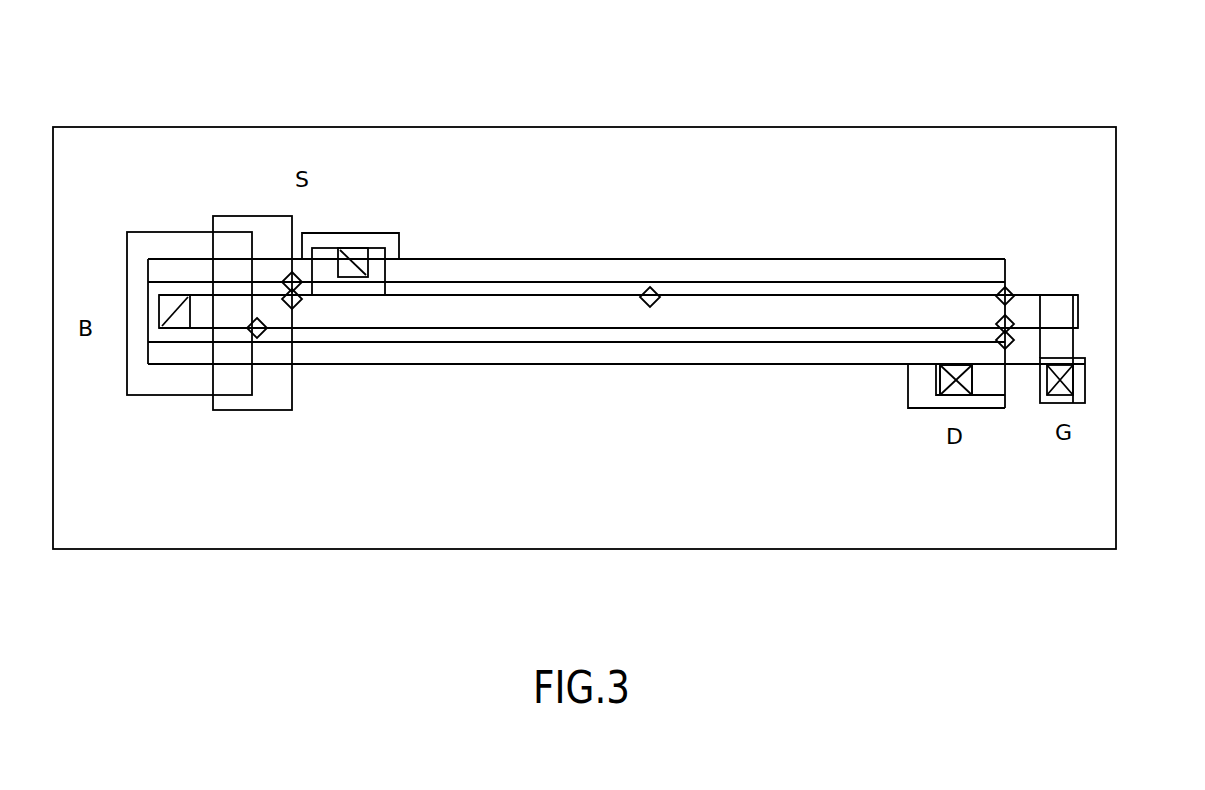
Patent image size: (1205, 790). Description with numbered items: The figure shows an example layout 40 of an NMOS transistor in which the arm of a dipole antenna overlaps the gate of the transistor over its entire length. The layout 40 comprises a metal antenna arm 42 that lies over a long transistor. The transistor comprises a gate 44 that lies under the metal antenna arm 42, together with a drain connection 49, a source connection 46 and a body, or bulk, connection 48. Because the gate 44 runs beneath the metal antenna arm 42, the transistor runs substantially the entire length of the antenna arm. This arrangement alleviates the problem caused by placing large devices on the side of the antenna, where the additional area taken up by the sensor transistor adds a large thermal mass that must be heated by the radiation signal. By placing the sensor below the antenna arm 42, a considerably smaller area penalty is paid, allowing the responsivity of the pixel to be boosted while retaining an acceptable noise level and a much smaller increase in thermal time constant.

The layout 40 is at (613, 108).
The metal antenna arm 42 is at (1060, 308).
The gate 44 is at (1063, 340).
The source connection 46 is at (352, 253).
The body (bulk) connection 48 is at (169, 307).
The drain connection 49 is at (965, 382).